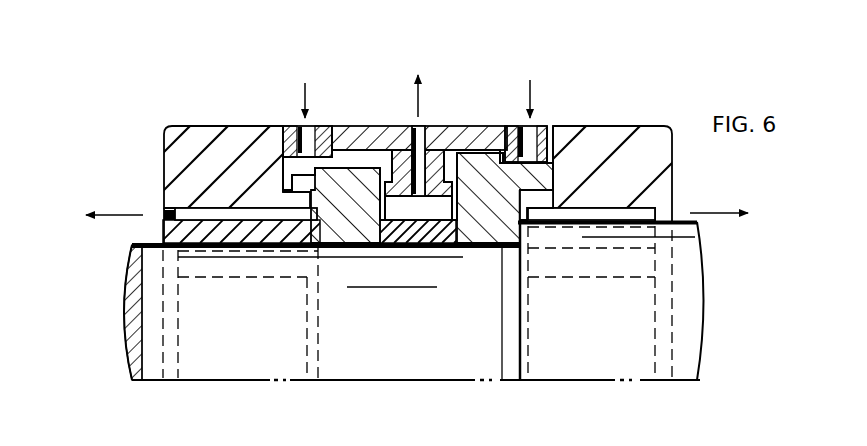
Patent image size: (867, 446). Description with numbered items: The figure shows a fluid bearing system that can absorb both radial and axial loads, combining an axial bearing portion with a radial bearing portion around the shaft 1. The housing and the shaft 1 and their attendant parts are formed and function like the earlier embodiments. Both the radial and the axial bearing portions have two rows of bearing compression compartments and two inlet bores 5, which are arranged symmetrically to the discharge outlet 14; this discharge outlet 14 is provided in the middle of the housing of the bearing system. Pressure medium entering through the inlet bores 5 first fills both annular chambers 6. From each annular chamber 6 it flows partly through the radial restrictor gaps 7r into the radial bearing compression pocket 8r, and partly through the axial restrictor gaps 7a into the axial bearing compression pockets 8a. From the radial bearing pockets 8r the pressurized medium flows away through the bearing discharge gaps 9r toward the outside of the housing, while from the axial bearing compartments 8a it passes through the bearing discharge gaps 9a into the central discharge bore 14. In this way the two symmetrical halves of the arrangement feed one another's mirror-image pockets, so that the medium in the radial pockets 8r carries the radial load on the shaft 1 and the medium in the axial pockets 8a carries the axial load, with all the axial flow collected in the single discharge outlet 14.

The shaft 1 is at (687, 275).
The inlet bore 5 is at (300, 135).
The annular chamber 6 is at (309, 150).
The axial restrictor gap 7a is at (334, 157).
The radial restrictor gap 7r is at (276, 188).
The axial bearing compression pocket 8a is at (393, 150).
The radial bearing compression pocket 8r is at (227, 214).
The axial bearing discharge gap 9a is at (380, 197).
The radial bearing discharge gap 9r is at (163, 216).
The discharge outlet 14 is at (422, 130).